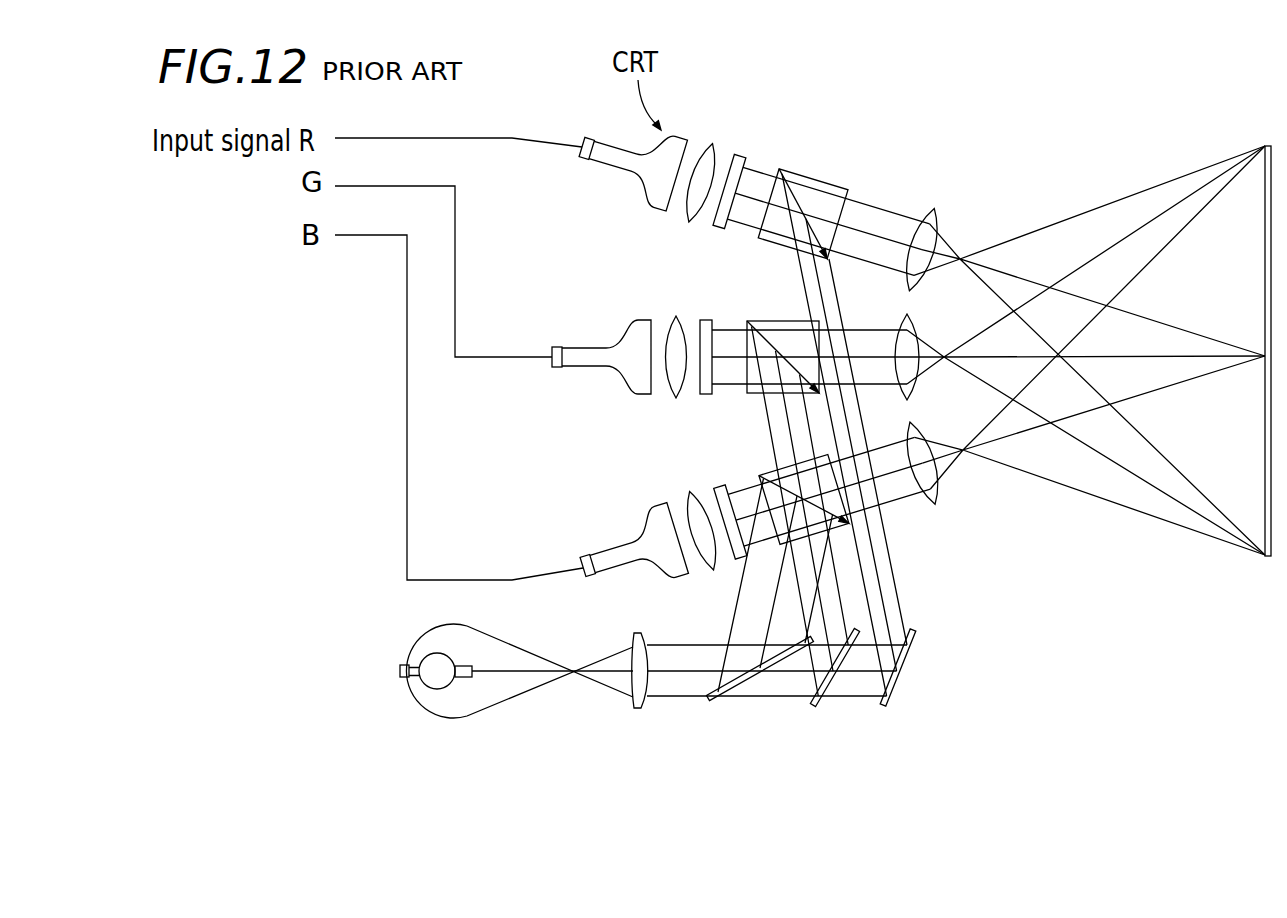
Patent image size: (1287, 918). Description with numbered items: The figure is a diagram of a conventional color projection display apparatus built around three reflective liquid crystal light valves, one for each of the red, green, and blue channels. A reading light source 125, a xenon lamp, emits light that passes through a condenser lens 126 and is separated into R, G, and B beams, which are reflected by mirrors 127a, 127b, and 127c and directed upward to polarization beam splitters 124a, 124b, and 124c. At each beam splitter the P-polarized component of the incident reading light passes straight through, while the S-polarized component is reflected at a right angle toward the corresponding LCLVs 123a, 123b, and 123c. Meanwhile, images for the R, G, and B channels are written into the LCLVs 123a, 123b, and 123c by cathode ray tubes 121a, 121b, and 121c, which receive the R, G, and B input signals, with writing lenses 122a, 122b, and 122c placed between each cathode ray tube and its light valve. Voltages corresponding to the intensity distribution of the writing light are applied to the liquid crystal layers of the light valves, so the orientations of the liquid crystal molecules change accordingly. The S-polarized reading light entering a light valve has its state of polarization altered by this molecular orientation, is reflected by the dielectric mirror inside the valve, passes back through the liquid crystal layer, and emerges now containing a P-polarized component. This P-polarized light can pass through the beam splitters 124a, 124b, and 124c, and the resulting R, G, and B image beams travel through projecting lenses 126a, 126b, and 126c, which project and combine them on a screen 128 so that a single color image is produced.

The CRT 121a is at (622, 174).
The CRT 121b is at (592, 372).
The CRT 121c is at (610, 548).
The writing lens 122a is at (712, 146).
The writing lens 122b is at (676, 318).
The writing lens 122c is at (707, 570).
The LCLV 123a is at (741, 157).
The LCLV 123b is at (707, 322).
The LCLV 123c is at (720, 489).
The polarization beam splitter 124a is at (818, 178).
The polarization beam splitter 124b is at (788, 322).
The polarization beam splitter 124c is at (777, 474).
The reading light source 125 is at (415, 700).
The condenser lens 126 is at (632, 701).
The projecting lens 126a is at (936, 212).
The projecting lens 126b is at (910, 317).
The projecting lens 126c is at (936, 491).
The mirror 127a is at (898, 696).
The mirror 127b is at (823, 703).
The mirror 127c is at (722, 700).
The screen 128 is at (1266, 142).